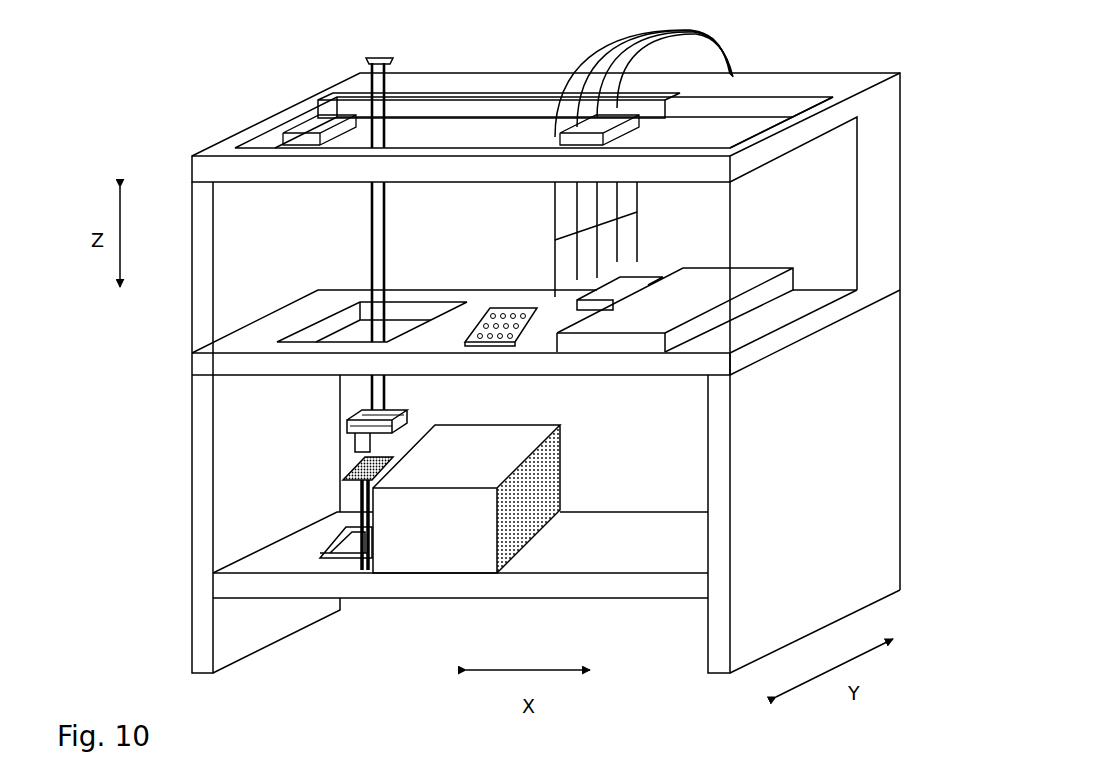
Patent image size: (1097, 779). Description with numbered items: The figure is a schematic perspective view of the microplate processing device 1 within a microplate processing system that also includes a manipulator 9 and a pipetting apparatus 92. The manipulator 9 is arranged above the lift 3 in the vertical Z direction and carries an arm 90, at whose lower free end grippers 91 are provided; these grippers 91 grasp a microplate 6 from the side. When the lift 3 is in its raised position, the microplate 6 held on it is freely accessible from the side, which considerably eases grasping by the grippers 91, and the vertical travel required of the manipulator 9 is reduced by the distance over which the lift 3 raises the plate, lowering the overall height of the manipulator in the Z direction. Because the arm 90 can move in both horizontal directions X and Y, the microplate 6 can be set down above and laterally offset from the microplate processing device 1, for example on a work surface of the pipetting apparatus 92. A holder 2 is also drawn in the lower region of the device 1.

The microplate processing device 1 is at (419, 582).
The sample holder 2 is at (342, 576).
The lift 3 is at (296, 513).
The microplate 6 is at (505, 312).
The manipulator 9 is at (355, 108).
The arm 90 is at (370, 257).
The grippers 91 is at (357, 443).
The pipetting apparatus 92 is at (720, 132).